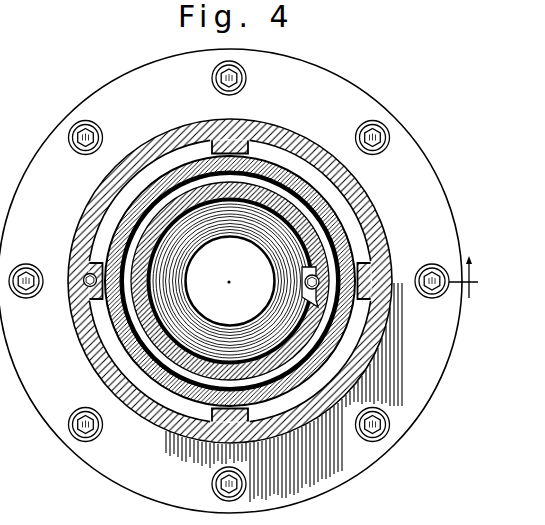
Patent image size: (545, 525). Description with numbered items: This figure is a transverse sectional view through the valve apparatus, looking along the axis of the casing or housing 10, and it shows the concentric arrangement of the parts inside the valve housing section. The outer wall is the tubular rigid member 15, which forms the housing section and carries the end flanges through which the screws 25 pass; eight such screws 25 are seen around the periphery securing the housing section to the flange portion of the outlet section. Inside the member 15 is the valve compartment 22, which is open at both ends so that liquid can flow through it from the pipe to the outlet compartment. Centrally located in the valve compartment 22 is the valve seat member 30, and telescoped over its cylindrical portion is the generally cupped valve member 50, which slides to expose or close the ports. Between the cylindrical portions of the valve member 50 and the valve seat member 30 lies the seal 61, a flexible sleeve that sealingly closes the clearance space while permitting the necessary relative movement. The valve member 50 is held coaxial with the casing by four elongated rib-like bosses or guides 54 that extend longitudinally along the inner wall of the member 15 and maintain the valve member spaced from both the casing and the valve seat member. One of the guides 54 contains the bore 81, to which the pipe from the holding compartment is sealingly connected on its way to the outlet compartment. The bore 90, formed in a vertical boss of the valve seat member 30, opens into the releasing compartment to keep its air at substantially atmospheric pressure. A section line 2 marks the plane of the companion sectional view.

The line 2— 2 is at (463, 287).
The casing or housing 10 is at (219, 282).
The tubular rigid member 15 is at (382, 215).
The valve compartment 22 is at (97, 334).
The screws 25 is at (73, 128).
The valve seat member 30 is at (300, 323).
The valve member 50 is at (123, 201).
The rib-like bosses or guides 54 is at (213, 143).
The seal 61 is at (173, 192).
The bore 81 is at (87, 278).
The bore 90 is at (293, 267).